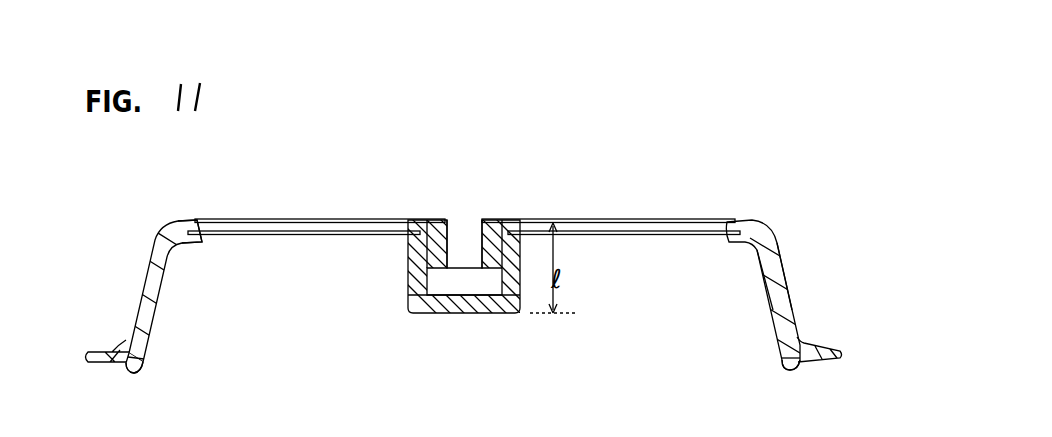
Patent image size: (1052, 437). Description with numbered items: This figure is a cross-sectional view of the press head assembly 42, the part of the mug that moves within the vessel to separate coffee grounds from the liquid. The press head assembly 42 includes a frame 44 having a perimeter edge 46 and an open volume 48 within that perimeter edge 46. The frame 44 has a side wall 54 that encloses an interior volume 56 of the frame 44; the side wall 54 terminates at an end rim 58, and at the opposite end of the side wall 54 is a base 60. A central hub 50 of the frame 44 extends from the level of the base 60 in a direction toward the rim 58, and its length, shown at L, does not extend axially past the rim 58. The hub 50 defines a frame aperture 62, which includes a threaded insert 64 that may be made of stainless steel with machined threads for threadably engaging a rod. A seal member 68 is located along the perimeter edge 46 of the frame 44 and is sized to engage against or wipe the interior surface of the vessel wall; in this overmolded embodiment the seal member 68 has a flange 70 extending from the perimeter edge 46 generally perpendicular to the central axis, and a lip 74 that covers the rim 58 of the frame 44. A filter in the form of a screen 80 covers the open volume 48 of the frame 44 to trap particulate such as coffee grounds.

The press head assembly 42 is at (713, 119).
The frame 44 is at (775, 245).
The perimeter edge 46 is at (135, 298).
The open volume 48 is at (255, 235).
The central hub 50 is at (407, 274).
The side wall 54 is at (790, 290).
The interior volume 56 is at (773, 307).
The end rim 58 is at (135, 372).
The base 60 is at (177, 220).
The frame aperture 62 is at (500, 281).
The threaded insert 64 is at (450, 237).
The seal member 68 is at (102, 351).
The flange 70 is at (836, 348).
The lip 74 is at (787, 371).
The screen 80 is at (613, 218).